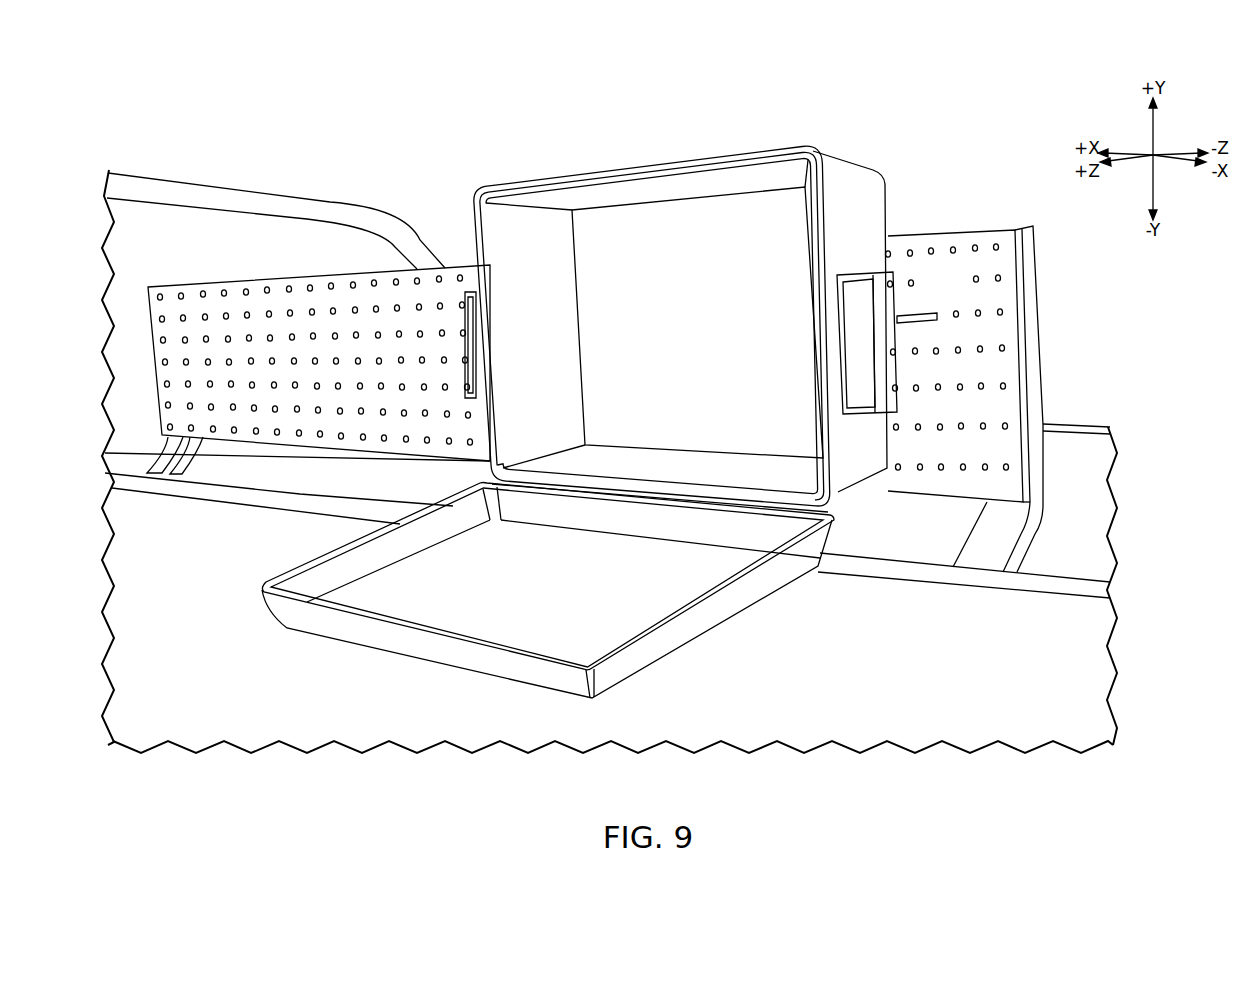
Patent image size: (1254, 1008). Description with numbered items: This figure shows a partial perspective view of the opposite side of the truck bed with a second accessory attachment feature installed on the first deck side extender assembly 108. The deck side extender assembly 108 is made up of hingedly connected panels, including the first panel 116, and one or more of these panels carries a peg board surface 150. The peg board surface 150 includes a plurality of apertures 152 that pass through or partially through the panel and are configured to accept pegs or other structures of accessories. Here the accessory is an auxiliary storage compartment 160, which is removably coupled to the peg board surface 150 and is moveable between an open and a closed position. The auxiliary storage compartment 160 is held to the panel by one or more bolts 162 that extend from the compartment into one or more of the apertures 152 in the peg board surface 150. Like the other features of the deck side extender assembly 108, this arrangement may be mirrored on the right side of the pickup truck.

The auxiliary storage compartment 160 is at (613, 378).
The first deck side extender assembly 108 is at (988, 347).
The first panel 116 is at (318, 353).
The peg board surface 150 is at (322, 297).
The apertures 152 is at (1003, 315).
The bolts 162 is at (932, 313).